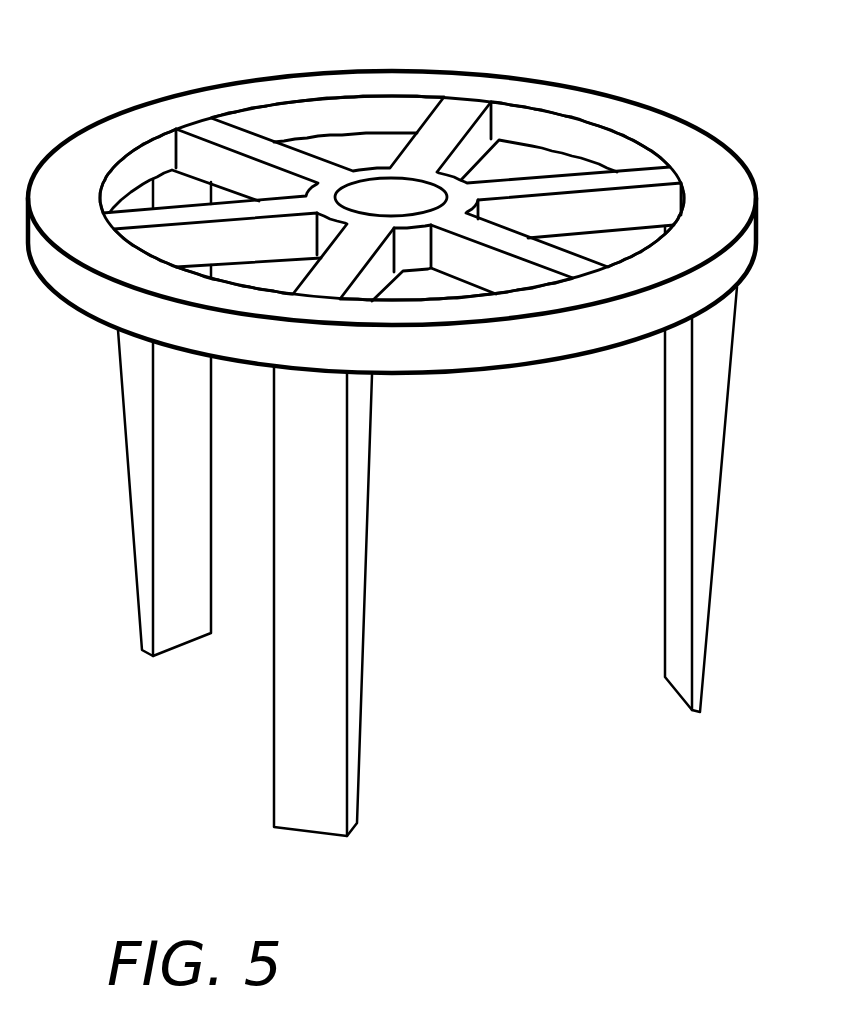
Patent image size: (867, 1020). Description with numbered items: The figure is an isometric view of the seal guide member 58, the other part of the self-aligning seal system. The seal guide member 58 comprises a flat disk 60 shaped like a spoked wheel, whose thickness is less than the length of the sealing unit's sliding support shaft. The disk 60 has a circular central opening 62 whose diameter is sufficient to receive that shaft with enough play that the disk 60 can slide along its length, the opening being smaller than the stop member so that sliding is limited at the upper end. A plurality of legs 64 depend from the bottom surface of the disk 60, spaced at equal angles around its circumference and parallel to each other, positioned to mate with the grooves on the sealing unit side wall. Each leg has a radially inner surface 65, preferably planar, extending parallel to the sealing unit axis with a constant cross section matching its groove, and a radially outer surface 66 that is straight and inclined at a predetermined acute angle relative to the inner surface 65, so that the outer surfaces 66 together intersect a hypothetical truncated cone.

The seal guide member 58 is at (427, 421).
The flat disk 60 is at (392, 189).
The circular central opening 62 is at (393, 190).
The legs 64 is at (362, 738).
The radially inner surfaces 65 is at (677, 592).
The radially outer surfaces 66 is at (308, 712).